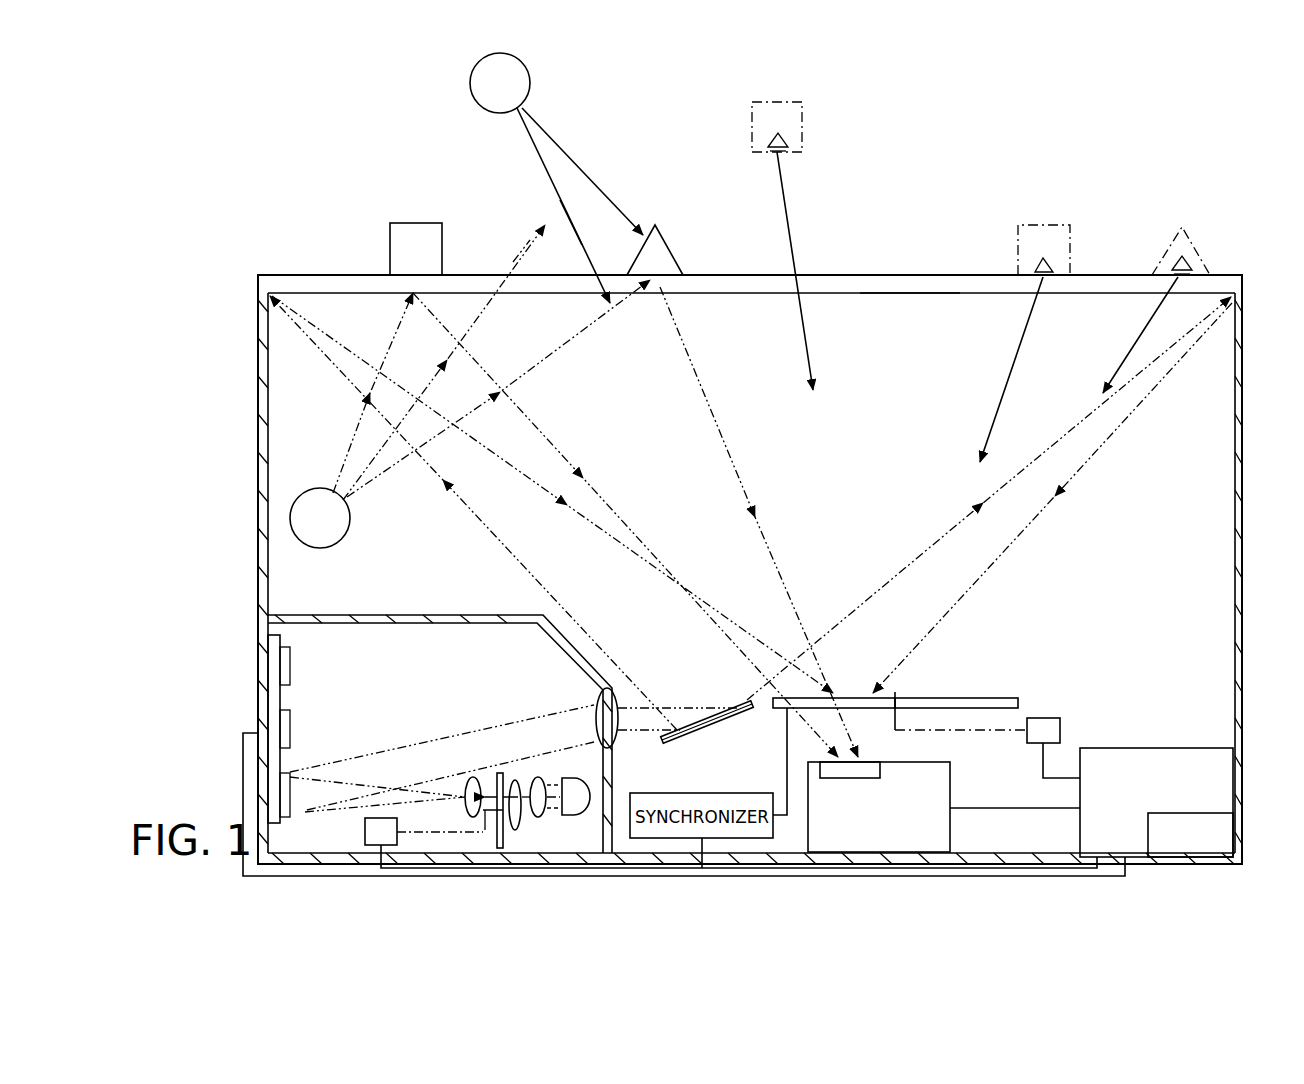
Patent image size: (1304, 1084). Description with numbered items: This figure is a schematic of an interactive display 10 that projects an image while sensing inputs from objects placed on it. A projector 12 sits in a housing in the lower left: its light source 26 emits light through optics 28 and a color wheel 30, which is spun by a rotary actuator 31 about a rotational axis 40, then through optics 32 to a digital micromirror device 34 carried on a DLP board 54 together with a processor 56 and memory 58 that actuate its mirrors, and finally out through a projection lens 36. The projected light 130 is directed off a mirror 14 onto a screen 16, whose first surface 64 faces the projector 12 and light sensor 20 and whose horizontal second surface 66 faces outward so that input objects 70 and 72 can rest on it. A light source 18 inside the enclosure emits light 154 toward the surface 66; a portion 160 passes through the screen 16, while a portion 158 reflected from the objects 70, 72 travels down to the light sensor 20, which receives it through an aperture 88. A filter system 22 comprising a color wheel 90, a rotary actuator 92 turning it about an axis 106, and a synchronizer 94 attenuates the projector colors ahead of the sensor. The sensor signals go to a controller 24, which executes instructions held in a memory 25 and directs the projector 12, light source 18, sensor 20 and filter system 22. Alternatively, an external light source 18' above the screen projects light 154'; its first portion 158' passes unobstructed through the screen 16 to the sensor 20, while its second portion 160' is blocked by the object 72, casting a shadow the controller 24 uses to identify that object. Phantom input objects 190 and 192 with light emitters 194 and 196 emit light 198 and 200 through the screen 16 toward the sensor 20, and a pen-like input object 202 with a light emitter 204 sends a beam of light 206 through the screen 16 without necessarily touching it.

The interactive display 10 is at (280, 243).
The projector 12 is at (442, 612).
The mirror 14 is at (712, 727).
The screen 16 is at (1090, 273).
The light source 18 is at (315, 491).
The light source 18' is at (480, 98).
The light sensor 20 is at (952, 788).
The filter system 22 is at (967, 693).
The controller 24 is at (1163, 748).
The memory 25 is at (1220, 813).
The light source 26 is at (573, 777).
The optics 28 is at (543, 815).
The color wheel 30 is at (497, 840).
The rotary actuator 31 is at (365, 830).
The optics 32 is at (478, 780).
The digital micromirror device 34 is at (293, 800).
The projection lens 36 is at (598, 690).
The rotational axis 40 is at (518, 792).
The DLP board 54 is at (274, 633).
The processor 56 is at (293, 732).
The memory 58 is at (290, 670).
The first surface 64 is at (895, 297).
The second surface 66 is at (897, 275).
The object 70 is at (390, 257).
The object 72 is at (670, 247).
The aperture 88 is at (883, 770).
The color wheel 90 is at (858, 698).
The rotary actuator 92 is at (1043, 718).
The synchronizer 94 is at (703, 793).
The axis 106 is at (895, 692).
The light 130 is at (523, 470).
The light 154 is at (490, 362).
The light 154' is at (584, 201).
The reflected light portion 158 is at (635, 522).
The first light portion 158' is at (526, 210).
The transmitted light portion 160 is at (489, 244).
The second light portion 160' is at (598, 171).
The input object 190 is at (1018, 238).
The input object 192 is at (1187, 240).
The light emitter 194 is at (1037, 260).
The light emitter 196 is at (1190, 255).
The light 198 is at (1017, 353).
The light 200 is at (1140, 337).
The input object 202 is at (803, 127).
The light emitter 204 is at (770, 140).
The beam of light 206 is at (800, 313).